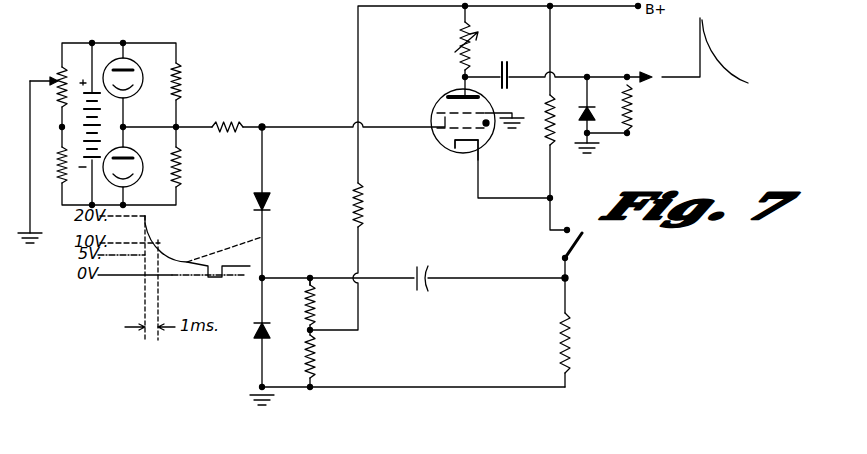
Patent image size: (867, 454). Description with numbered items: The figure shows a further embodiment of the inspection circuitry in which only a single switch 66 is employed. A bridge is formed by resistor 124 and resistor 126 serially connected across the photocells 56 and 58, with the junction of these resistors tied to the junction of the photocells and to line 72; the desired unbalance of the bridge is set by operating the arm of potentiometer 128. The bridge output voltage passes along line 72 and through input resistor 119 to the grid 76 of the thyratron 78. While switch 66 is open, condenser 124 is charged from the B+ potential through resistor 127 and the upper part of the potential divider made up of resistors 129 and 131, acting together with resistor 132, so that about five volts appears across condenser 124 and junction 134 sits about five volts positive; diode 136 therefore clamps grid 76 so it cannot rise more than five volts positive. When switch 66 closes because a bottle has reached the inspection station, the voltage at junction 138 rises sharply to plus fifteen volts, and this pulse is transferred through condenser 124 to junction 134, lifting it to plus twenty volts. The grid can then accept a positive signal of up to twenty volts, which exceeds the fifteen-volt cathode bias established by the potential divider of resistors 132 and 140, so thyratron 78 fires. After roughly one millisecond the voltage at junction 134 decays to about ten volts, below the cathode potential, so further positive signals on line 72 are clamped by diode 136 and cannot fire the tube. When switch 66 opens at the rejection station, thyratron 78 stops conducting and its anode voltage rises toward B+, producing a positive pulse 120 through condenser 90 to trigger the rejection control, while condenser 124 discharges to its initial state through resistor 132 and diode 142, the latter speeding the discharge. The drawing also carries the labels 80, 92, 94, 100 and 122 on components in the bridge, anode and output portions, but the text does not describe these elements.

The potentiometer 128 is at (56, 68).
The first diode tube 56 is at (141, 76).
The second diode tube 58 is at (141, 165).
The battery 80 is at (112, 126).
The resistor / capacitor 124 is at (186, 82).
The resistor 126 is at (182, 176).
The resistor 72 is at (212, 123).
The junction 119 is at (263, 126).
The diode 136 is at (268, 197).
The resistor 127 is at (363, 206).
The resistor 129 is at (332, 266).
The resistor tap 134 is at (289, 293).
The resistor 131 is at (316, 359).
The diode 142 is at (255, 324).
The variable resistor 92 is at (456, 40).
The capacitor 90 is at (497, 66).
The vacuum tube 76 is at (432, 124).
The cathode 78 is at (452, 150).
The resistor 140 is at (546, 128).
The diode 100 is at (600, 118).
The resistor 94 is at (634, 108).
The output terminal 122 is at (646, 69).
The output waveform 120 is at (725, 62).
The switch 66 is at (578, 250).
The junction 138 is at (569, 281).
The resistor 132 is at (571, 341).